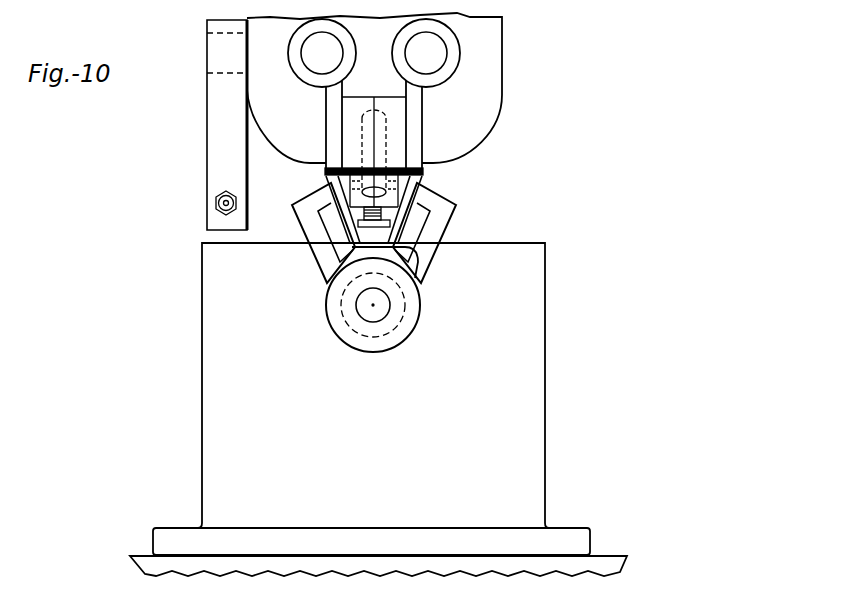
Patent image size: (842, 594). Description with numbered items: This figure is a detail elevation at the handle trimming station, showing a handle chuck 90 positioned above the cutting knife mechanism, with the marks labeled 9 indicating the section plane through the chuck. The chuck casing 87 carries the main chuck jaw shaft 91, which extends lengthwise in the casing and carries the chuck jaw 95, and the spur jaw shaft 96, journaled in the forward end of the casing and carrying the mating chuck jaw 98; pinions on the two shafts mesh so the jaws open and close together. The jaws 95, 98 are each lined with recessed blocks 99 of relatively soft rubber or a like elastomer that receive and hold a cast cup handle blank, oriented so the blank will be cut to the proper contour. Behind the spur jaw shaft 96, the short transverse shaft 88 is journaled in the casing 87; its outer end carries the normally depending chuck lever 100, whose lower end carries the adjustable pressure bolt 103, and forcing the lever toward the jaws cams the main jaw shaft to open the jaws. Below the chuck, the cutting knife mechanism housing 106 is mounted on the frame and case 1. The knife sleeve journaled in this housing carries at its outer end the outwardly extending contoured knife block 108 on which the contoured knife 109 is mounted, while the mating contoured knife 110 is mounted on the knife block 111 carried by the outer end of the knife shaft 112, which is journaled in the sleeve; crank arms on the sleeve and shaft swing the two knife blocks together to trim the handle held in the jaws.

The frame and case 1 is at (605, 563).
The section line 9- 9 is at (374, 590).
The chuck casing 87 is at (497, 110).
The short transverse shaft 88 is at (207, 78).
The handle chuck 90 is at (502, 70).
The main chuck jaw shaft 91 is at (437, 62).
The chuck jaw 95 is at (413, 128).
The spur jaw shaft 96 is at (315, 63).
The chuck jaw 98 is at (335, 126).
The recessed blocks 99 is at (350, 157).
The chuck lever 100 is at (212, 138).
The adjustable pressure bolt 103 is at (217, 205).
The cutting knife mechanism housing 106 is at (530, 336).
The contoured knife block 108 is at (313, 250).
The contoured knife 109 is at (303, 207).
The mating contoured knife 110 is at (444, 201).
The knife block 111 is at (433, 230).
The knife shaft 112 is at (374, 310).